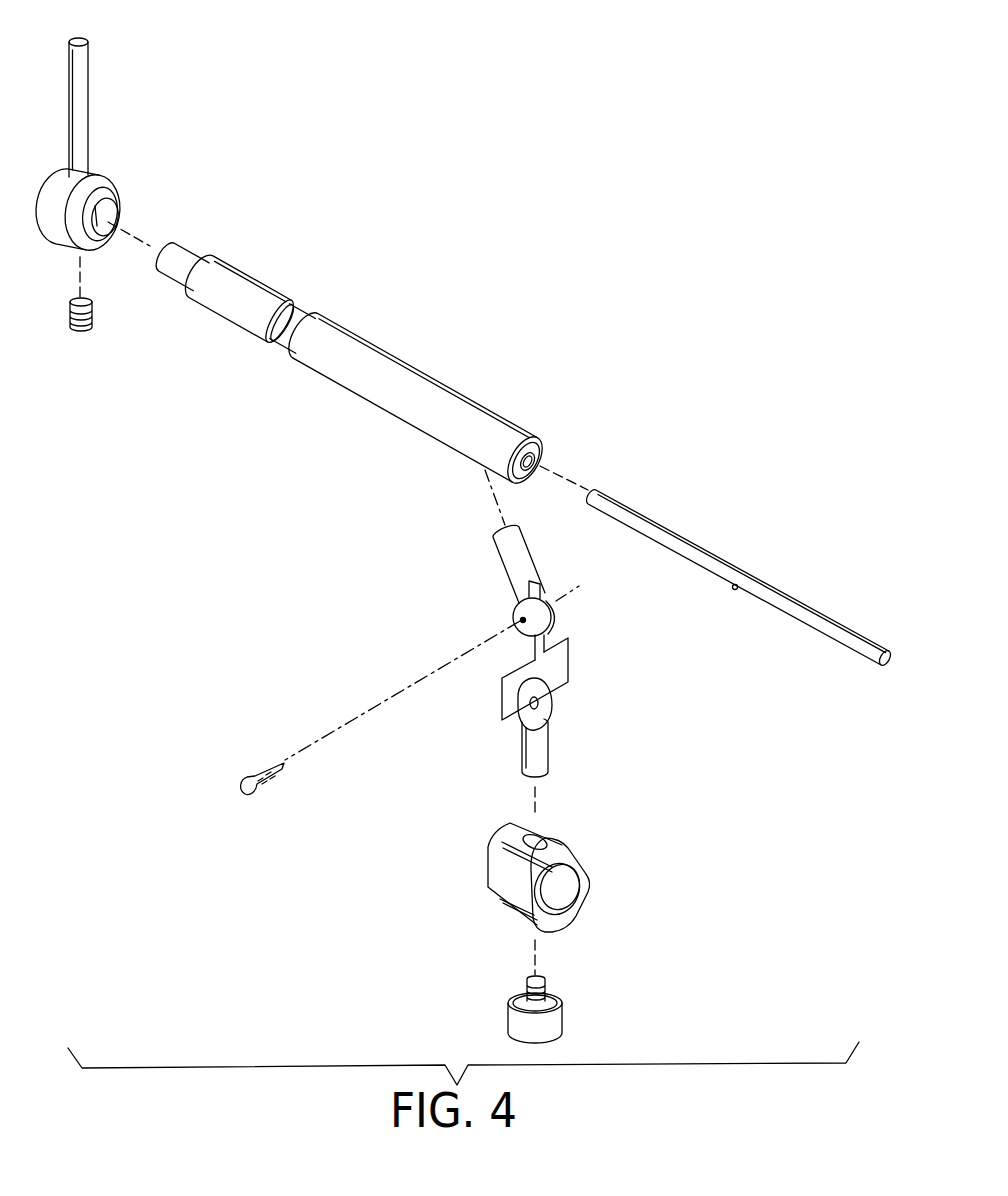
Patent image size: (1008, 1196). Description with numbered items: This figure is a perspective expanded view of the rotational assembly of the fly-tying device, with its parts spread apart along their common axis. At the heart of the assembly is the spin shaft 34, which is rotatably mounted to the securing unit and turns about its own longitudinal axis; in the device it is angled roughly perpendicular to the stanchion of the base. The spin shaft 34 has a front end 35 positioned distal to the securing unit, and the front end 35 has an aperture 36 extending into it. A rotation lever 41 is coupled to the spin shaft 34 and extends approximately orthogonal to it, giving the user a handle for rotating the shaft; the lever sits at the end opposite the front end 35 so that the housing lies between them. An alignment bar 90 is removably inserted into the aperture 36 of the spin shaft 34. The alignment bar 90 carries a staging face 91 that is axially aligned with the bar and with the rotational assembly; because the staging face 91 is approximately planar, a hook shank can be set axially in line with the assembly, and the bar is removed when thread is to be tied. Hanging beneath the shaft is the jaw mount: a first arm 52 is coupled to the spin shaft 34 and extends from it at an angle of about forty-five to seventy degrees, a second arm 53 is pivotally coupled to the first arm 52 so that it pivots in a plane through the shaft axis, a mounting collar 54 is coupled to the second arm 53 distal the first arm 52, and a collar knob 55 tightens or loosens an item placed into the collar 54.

The rotation lever 41 is at (89, 84).
The spin shaft 34 is at (390, 345).
The front end 35 is at (534, 454).
The aperture 36 is at (540, 456).
The alignment bar 90 is at (690, 541).
The staging face 91 is at (778, 612).
The first arm 52 is at (500, 562).
The second arm 53 is at (522, 752).
The mounting collar 54 is at (485, 870).
The collar knob 55 is at (508, 1003).